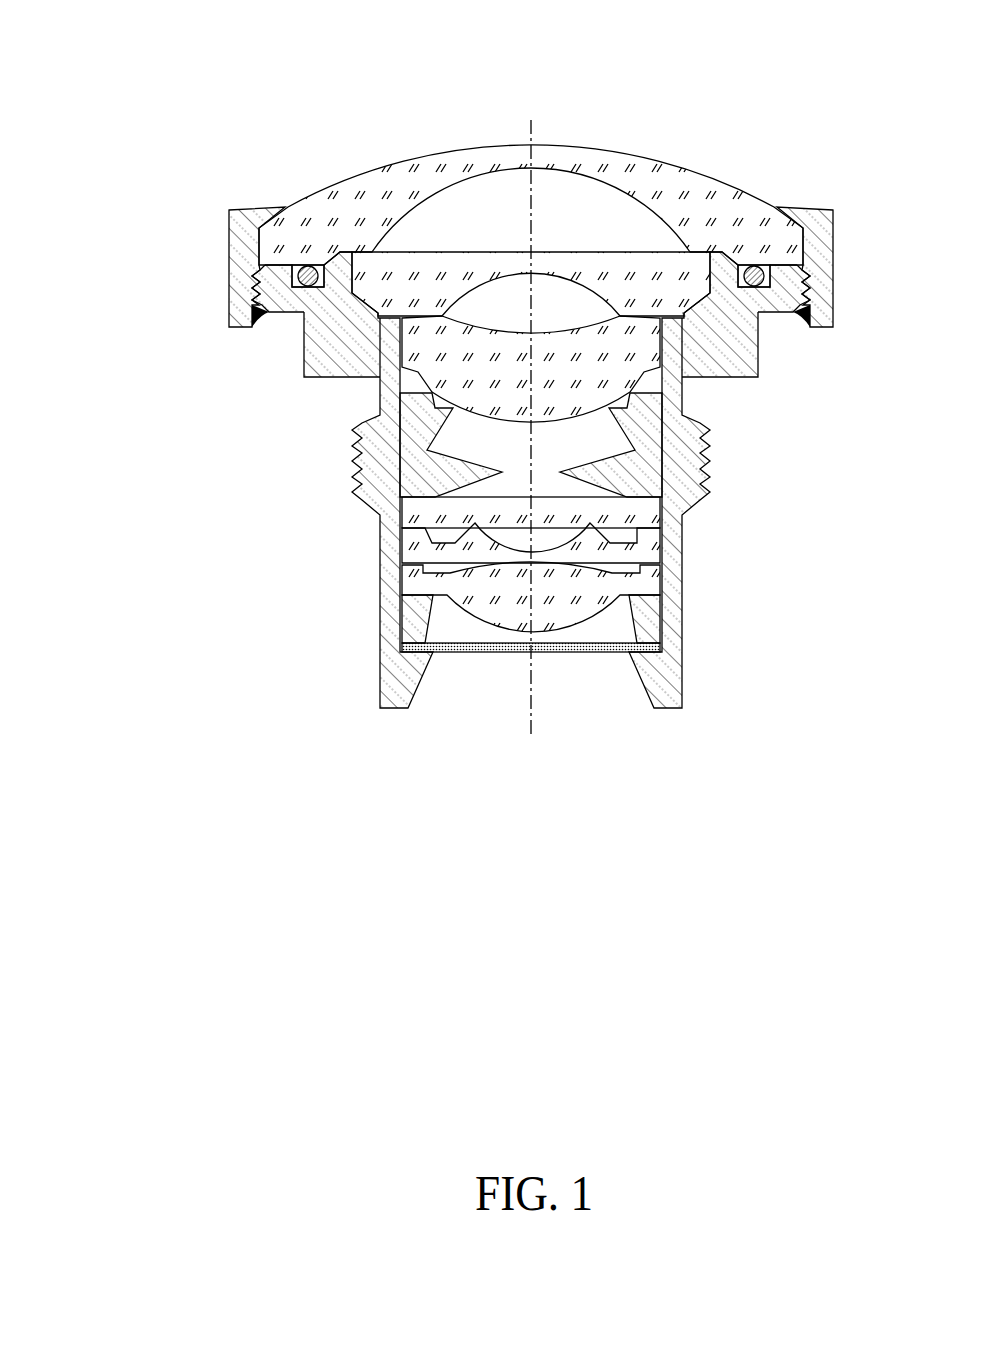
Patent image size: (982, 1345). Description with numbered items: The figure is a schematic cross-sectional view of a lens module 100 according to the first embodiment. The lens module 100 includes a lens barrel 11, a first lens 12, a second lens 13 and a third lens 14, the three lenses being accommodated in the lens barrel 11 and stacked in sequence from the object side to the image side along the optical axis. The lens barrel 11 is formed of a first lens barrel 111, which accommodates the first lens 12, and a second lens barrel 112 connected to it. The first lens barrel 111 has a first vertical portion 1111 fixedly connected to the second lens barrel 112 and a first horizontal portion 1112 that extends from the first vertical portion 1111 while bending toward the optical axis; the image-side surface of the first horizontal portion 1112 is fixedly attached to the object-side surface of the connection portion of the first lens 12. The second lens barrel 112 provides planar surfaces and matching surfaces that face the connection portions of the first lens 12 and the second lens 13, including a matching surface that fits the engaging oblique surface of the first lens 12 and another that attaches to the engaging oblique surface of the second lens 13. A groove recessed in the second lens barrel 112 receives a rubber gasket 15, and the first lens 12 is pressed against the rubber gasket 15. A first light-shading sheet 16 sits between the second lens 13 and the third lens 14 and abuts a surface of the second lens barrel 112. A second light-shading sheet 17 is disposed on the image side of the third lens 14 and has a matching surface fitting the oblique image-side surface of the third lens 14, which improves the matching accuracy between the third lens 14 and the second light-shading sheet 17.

The lens module 100 is at (551, 43).
The lens barrel 11 is at (100, 343).
The first lens barrel 111 is at (155, 230).
The first vertical portion 1111 is at (244, 271).
The first horizontal portion 1112 is at (266, 209).
The second lens barrel 112 is at (337, 348).
The first lens 12 is at (399, 204).
The second lens 13 is at (660, 290).
The third lens 14 is at (683, 372).
The rubber gasket 15 is at (772, 280).
The first light-shading sheet 16 is at (618, 357).
The second light-shading sheet 17 is at (645, 430).